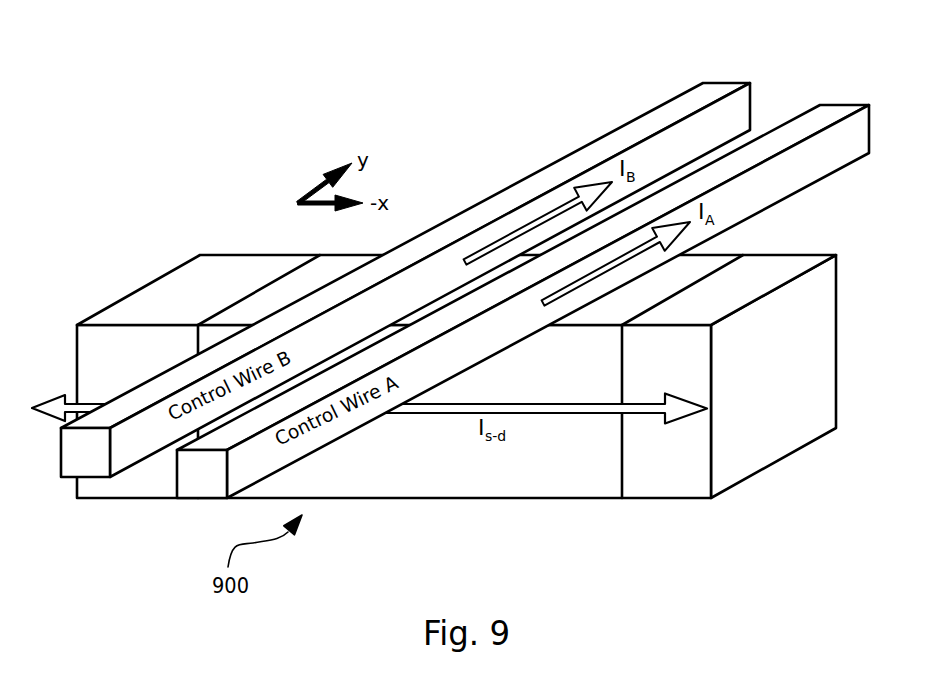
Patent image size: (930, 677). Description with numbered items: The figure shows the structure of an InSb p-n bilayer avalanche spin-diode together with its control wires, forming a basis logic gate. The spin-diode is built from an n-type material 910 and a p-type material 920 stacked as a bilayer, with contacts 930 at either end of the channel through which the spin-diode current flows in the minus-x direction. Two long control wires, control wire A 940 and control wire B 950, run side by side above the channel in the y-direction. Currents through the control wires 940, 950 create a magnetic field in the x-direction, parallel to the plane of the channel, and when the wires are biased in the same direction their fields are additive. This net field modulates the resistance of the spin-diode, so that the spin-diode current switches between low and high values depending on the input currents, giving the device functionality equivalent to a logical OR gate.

The n-type material 910 is at (697, 268).
The p-type material 920 is at (590, 473).
The contacts 930 is at (212, 265).
The control wire A 940 is at (830, 113).
The control wire B 950 is at (712, 90).